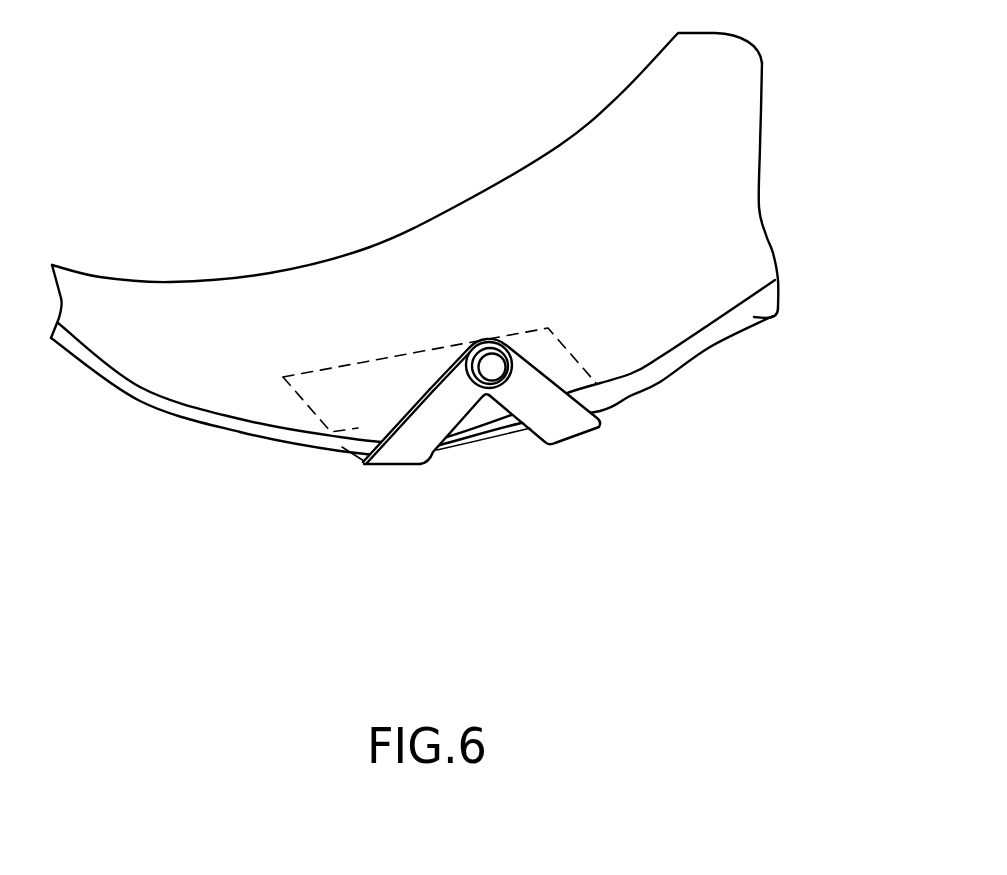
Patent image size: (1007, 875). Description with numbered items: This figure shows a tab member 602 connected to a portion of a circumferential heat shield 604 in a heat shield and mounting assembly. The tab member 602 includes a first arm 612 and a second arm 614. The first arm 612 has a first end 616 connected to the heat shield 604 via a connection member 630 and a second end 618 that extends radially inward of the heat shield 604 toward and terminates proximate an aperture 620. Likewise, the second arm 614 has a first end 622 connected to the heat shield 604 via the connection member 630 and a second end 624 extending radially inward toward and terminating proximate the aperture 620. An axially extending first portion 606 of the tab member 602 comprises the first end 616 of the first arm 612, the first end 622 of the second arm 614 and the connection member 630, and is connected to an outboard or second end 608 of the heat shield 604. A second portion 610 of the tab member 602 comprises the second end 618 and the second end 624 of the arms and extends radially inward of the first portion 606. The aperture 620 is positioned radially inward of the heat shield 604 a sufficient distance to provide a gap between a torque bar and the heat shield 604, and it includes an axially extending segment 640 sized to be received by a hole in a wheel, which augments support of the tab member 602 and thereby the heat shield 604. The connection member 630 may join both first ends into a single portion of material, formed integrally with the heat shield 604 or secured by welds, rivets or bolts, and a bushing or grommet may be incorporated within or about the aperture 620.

The tab member 602 is at (423, 392).
The heat shield 604 is at (753, 147).
The first portion 606 is at (358, 463).
The second end 608 is at (752, 317).
The second portion 610 is at (430, 443).
The first arm 612 is at (400, 450).
The second arm 614 is at (567, 427).
The first end 616 is at (342, 447).
The second end 618 is at (453, 360).
The aperture 620 is at (490, 370).
The first end 622 is at (600, 410).
The second end 624 is at (518, 360).
The connection member 630 is at (333, 375).
The segment 640 is at (543, 360).